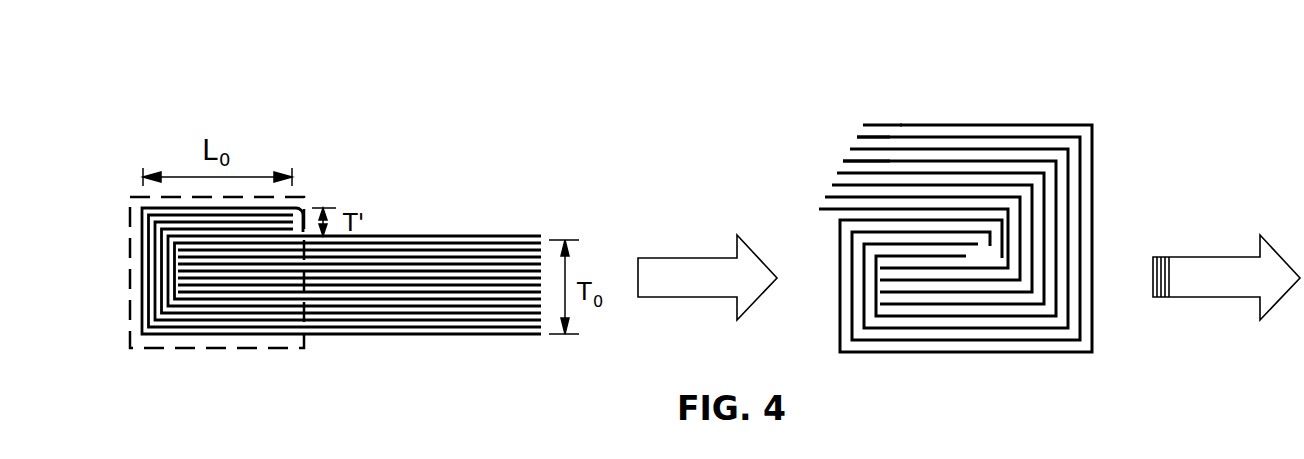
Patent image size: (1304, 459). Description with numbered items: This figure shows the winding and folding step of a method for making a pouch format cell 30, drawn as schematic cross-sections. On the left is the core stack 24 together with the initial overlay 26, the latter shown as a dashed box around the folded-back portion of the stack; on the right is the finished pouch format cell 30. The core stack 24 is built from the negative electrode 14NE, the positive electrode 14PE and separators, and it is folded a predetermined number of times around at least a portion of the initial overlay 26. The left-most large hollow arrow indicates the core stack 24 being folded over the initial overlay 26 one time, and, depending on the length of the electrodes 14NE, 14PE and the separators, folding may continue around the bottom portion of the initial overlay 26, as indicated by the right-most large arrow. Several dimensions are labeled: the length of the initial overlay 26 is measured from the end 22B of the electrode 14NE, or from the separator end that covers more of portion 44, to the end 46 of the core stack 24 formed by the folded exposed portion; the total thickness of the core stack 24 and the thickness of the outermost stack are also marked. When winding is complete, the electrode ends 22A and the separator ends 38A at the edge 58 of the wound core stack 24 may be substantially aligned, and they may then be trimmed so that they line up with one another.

The core stack 24 is at (516, 225).
The initial overlay 26 is at (173, 362).
The portion 44 is at (197, 232).
The end of the core stack 46 is at (141, 310).
The end of the electrode 22B is at (296, 218).
The positive electrode 14PE is at (463, 295).
The negative electrode 14NE is at (387, 270).
The pouch format cell 30 is at (1024, 82).
The edge of the wound core stack 58 is at (861, 84).
The separator ends 38A is at (862, 127).
The electrode ends 22A is at (850, 162).